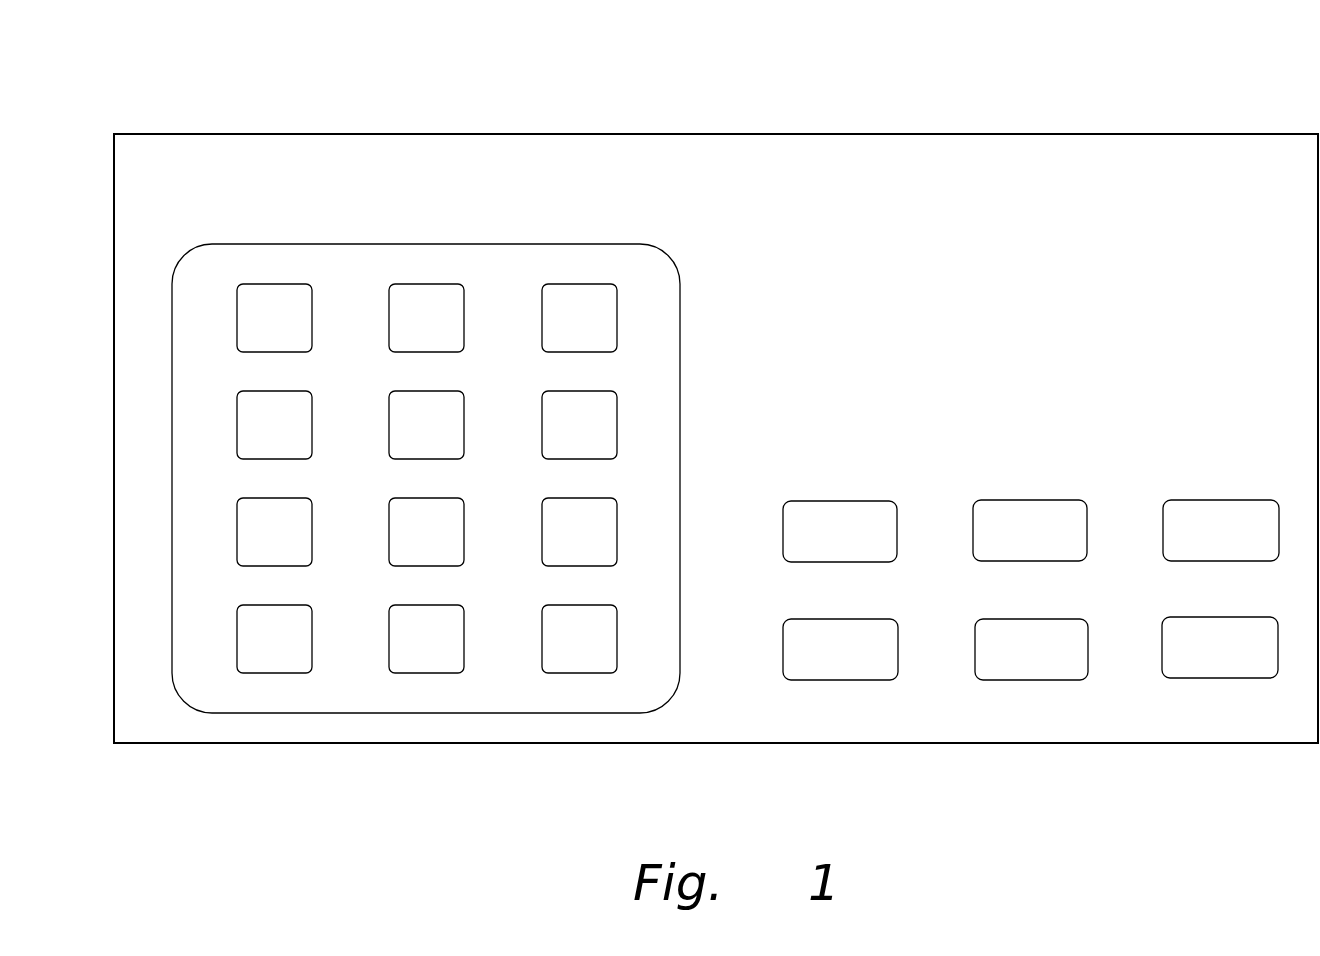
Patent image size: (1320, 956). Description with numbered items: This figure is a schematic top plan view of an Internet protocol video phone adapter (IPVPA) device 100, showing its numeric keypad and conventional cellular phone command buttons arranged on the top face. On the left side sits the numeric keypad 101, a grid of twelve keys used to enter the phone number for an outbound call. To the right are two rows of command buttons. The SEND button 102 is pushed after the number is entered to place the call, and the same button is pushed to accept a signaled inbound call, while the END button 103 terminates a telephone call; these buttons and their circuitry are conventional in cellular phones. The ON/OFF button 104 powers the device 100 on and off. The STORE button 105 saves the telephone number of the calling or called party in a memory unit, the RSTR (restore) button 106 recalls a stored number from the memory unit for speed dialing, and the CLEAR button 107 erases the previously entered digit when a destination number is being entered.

The Internet protocol video phone adapter (IPVPA) device 100 is at (1000, 155).
The numeric keypad 101 is at (422, 714).
The SEND button 102 is at (827, 680).
The END button 103 is at (1030, 680).
The ON/OFF button 104 is at (1217, 678).
The STORE button 105 is at (836, 502).
The RSTR (restore) button 106 is at (1037, 500).
The CLEAR button 107 is at (1207, 500).